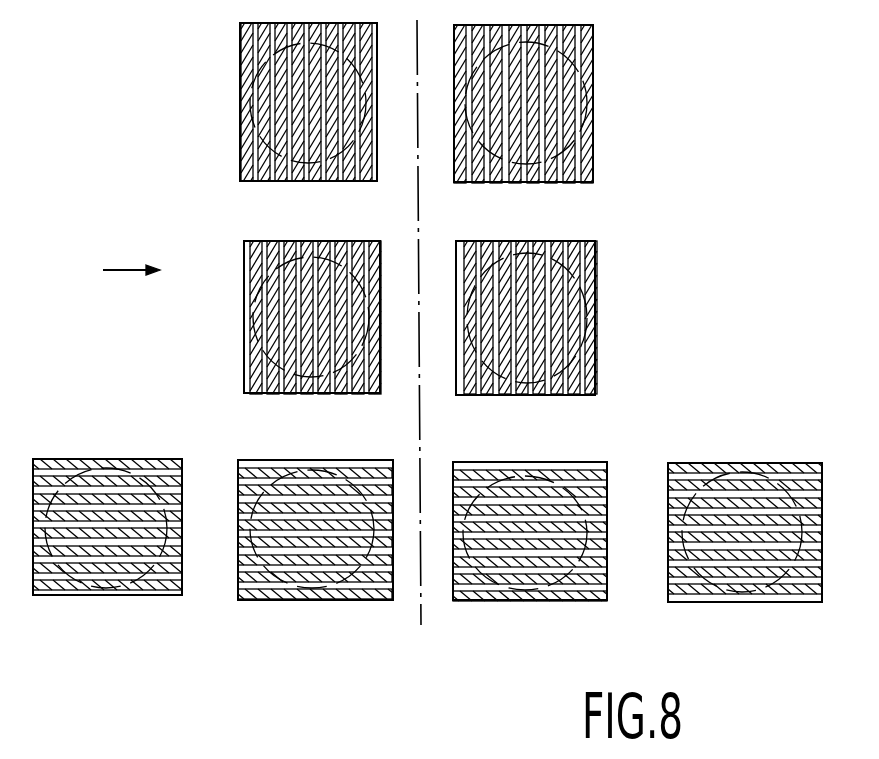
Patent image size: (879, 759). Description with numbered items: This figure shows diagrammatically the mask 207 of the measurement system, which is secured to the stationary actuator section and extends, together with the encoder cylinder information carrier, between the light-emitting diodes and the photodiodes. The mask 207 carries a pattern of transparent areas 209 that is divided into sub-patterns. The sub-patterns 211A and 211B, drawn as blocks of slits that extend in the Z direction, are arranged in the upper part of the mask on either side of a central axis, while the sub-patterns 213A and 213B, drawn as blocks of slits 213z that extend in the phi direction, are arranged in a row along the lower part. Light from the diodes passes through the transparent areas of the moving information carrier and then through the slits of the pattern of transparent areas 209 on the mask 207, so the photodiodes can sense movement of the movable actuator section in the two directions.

The sub-pattern 211A is at (240, 44).
The sub-pattern 211B is at (593, 47).
The pattern of transparent areas 209 is at (255, 206).
The mask 207 is at (131, 256).
The sub-pattern 213A is at (118, 597).
The sub-pattern 213B is at (510, 601).
The slits 213z is at (576, 601).